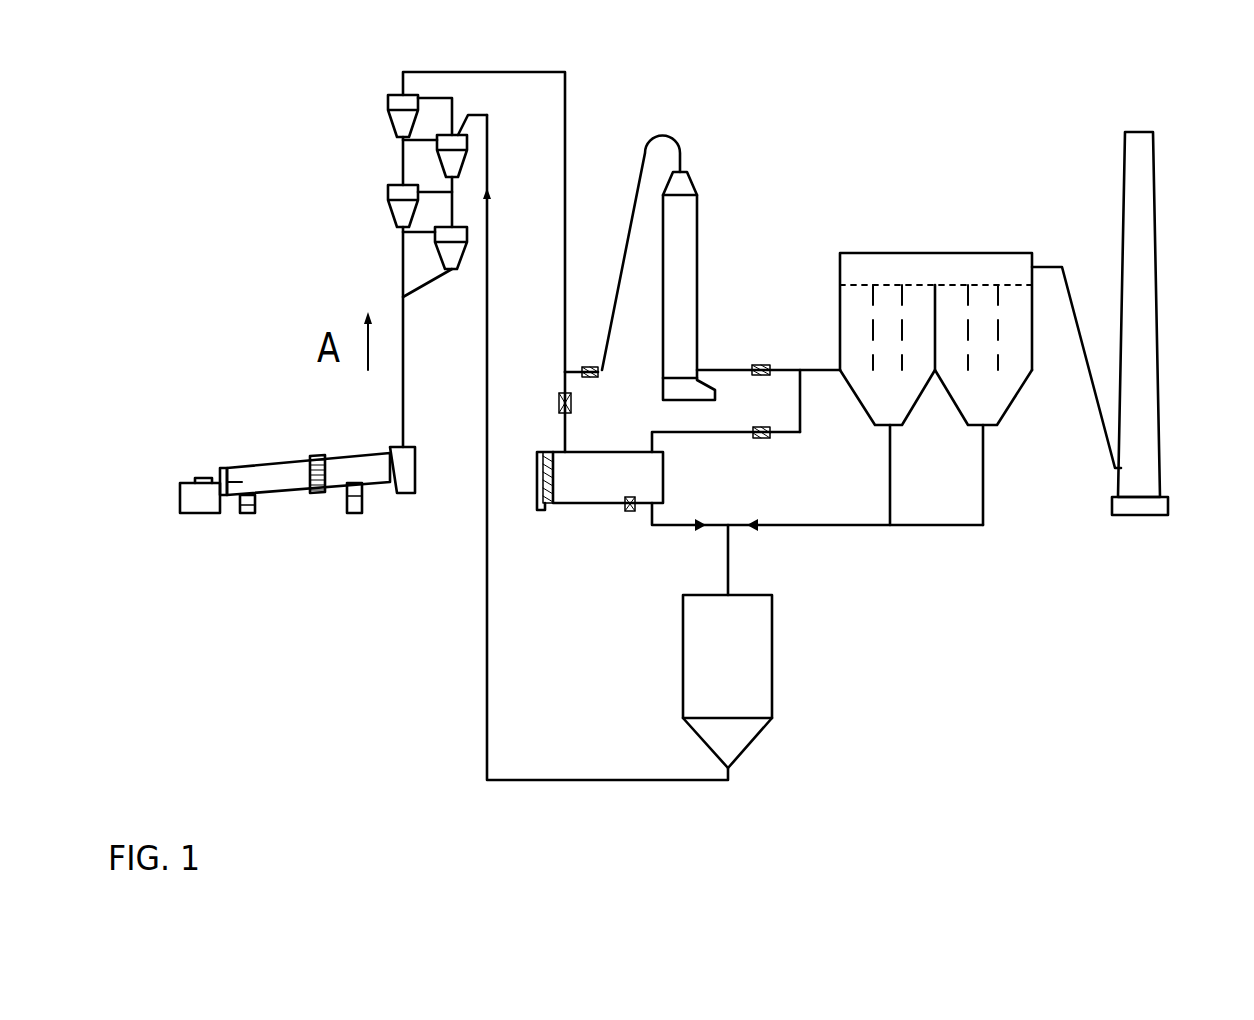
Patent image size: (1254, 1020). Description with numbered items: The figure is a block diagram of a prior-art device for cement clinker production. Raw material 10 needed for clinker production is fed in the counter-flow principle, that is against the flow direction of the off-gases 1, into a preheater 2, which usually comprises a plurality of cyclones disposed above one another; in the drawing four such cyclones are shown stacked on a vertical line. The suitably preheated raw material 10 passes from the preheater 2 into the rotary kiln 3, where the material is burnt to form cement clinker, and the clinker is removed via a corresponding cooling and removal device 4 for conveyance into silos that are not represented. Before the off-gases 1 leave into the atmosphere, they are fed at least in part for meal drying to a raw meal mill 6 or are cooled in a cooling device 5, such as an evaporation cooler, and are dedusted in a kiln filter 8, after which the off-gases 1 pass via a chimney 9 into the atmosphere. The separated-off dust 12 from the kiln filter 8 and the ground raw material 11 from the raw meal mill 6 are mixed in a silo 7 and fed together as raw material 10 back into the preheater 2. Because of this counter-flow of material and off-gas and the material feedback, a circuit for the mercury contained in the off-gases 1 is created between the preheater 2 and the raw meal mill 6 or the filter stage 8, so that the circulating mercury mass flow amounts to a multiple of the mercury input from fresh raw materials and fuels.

The off-gases 1 is at (458, 71).
The preheater 2 is at (443, 267).
The rotary kiln 3 is at (297, 475).
The cooling and removal device 4 is at (198, 507).
The cooling device 5 is at (683, 238).
The raw meal mill 6 is at (588, 488).
The silo 7 is at (757, 650).
The kiln filter 8 is at (950, 252).
The chimney 9 is at (1138, 202).
The raw material 10 is at (493, 119).
The ground raw material 11 is at (693, 528).
The separated-off dust 12 is at (783, 528).